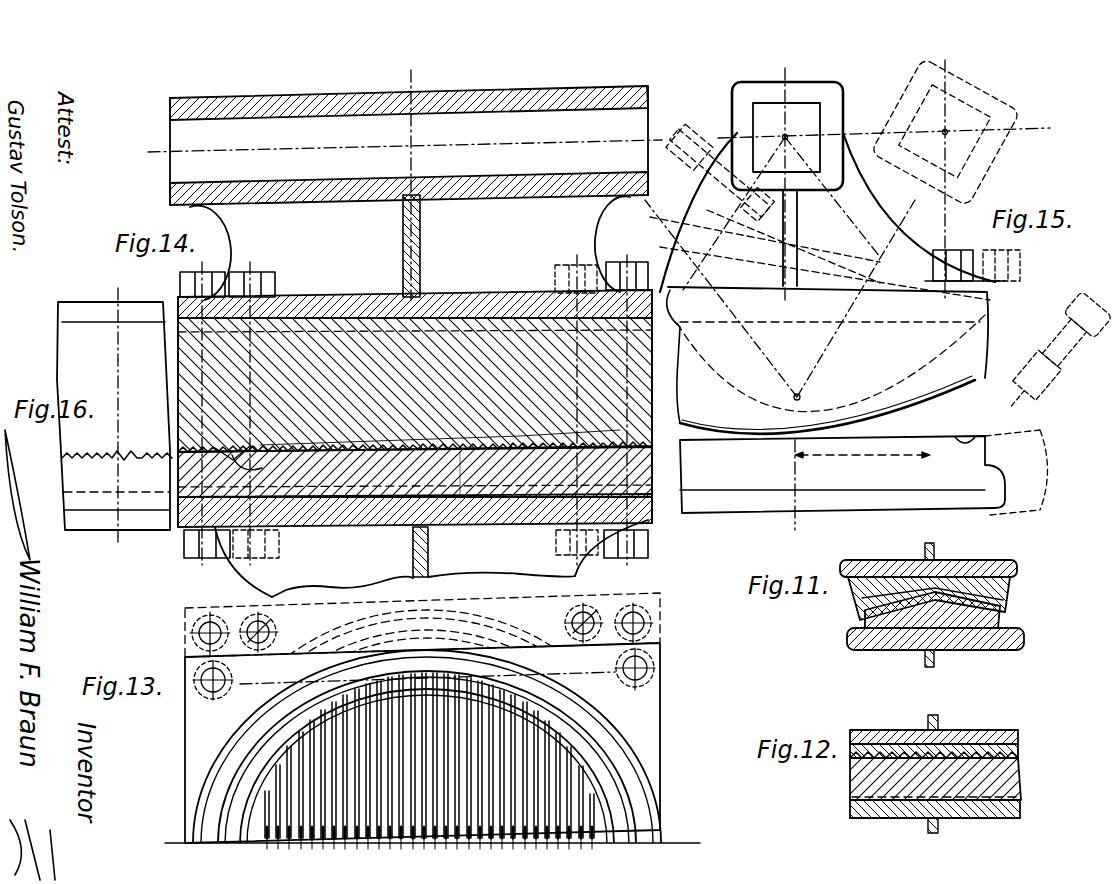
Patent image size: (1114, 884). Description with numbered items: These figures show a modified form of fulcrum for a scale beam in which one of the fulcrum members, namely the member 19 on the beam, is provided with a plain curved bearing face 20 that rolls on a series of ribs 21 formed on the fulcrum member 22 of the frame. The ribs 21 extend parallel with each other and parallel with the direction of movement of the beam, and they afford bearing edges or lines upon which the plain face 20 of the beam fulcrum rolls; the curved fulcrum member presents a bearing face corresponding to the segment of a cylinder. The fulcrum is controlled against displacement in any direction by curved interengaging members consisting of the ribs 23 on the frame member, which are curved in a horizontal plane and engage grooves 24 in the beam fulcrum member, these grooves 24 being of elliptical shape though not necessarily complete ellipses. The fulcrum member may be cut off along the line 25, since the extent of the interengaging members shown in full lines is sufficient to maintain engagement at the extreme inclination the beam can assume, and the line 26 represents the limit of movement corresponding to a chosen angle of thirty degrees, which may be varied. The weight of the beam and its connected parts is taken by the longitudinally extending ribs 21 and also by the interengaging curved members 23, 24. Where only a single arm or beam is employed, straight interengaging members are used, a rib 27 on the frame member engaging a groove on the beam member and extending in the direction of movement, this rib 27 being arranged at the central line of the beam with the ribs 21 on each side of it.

In FIG. 14, the member 19 is at (415, 385).
In FIG. 14, the plain curved bearing face 20 is at (498, 449).
In FIG. 15, the plain curved bearing face 20 is at (770, 440).
In FIG. 14, the ribs 21 is at (508, 452).
In FIG. 14, the fulcrum member 22 is at (415, 472).
In FIG. 15, the fulcrum member 22 is at (842, 483).
In FIG. 14, the ribs 23 is at (255, 462).
In FIG. 14, the grooves 24 is at (233, 456).
In FIG. 13, the line 25 is at (425, 718).
In FIG. 13, the line 26 is at (422, 651).
In FIG. 15, the line 26 is at (970, 80).
In FIG. 16, the rib 27 is at (120, 462).